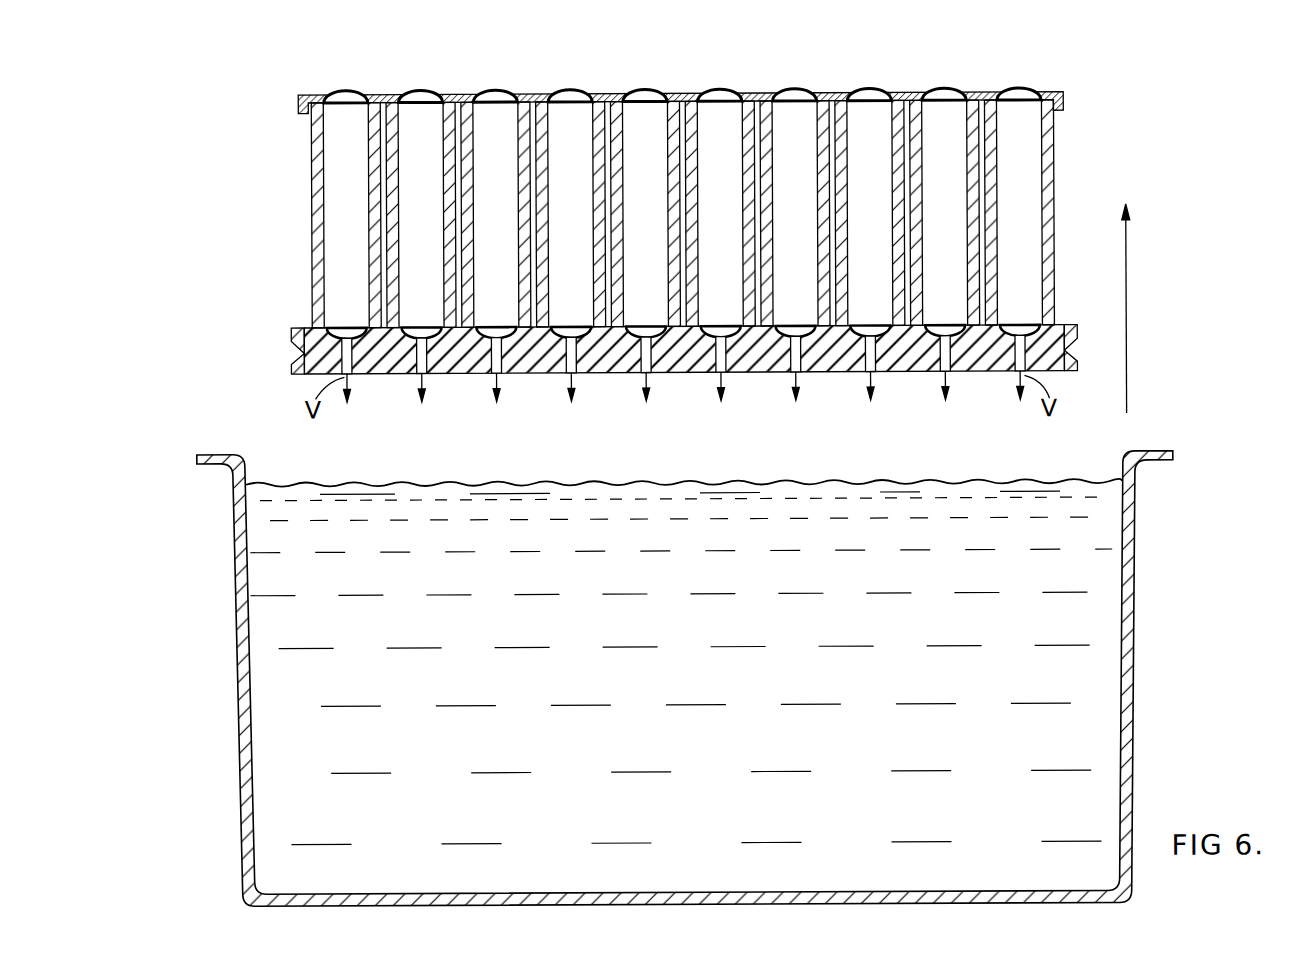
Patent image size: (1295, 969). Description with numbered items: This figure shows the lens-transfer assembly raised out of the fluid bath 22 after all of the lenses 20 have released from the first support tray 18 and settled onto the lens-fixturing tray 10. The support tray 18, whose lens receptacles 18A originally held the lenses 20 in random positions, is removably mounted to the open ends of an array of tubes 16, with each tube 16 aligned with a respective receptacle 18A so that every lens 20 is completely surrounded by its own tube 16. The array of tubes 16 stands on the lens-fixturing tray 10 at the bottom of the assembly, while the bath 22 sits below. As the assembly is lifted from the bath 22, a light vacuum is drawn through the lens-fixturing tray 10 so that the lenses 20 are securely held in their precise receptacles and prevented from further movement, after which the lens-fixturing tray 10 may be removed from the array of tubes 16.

The lens-fixturing tray 10 is at (304, 356).
The tubes 16 is at (1056, 243).
The support tray 18 is at (908, 91).
The receptacles 18A is at (1020, 89).
The lenses 20 is at (1025, 323).
The bath 22 is at (925, 500).